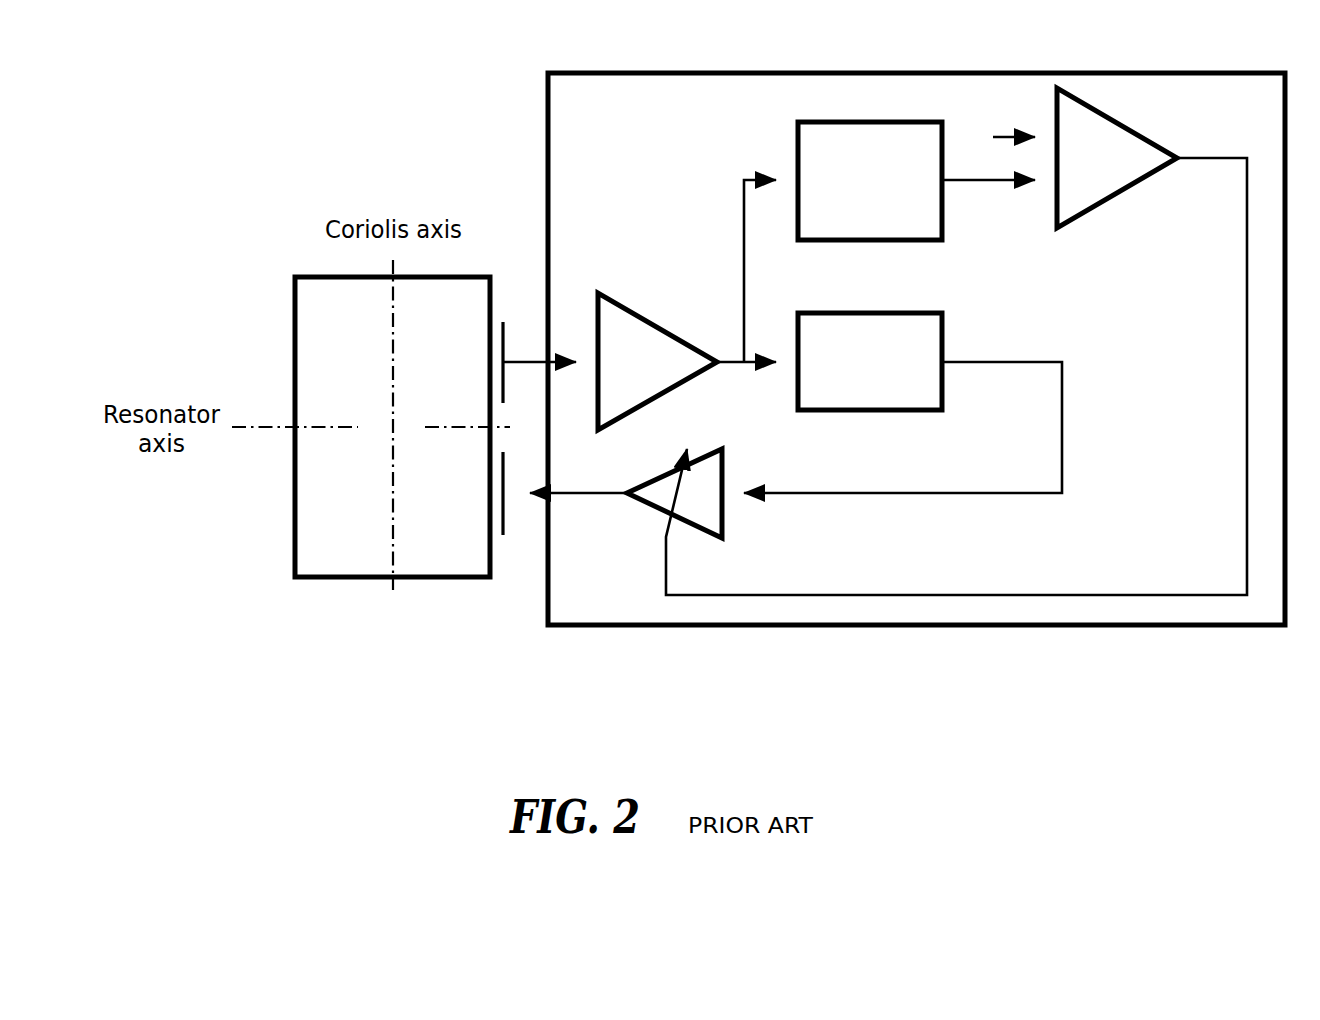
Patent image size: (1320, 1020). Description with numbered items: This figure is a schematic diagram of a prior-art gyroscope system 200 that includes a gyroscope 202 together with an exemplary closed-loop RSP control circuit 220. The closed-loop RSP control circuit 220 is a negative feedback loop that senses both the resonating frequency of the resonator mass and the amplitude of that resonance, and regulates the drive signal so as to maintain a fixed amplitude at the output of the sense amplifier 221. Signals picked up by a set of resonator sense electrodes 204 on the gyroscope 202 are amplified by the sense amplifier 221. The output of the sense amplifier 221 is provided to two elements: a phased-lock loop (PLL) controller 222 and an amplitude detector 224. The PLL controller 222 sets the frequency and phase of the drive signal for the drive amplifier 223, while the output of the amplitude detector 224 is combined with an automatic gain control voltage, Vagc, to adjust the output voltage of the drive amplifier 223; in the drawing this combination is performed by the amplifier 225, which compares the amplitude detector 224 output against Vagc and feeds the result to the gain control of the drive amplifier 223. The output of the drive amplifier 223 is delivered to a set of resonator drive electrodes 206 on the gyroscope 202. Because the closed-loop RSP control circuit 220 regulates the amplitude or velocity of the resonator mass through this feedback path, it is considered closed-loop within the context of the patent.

The gyroscope system 200 is at (728, 707).
The gyroscope 202 is at (470, 562).
The resonator sense electrodes 204 is at (505, 337).
The resonator drive electrodes 206 is at (505, 515).
The closed-loop RSP control circuit 220 is at (632, 120).
The sense amplifier 221 is at (662, 388).
The phased-lock loop (PLL) controller 222 is at (892, 402).
The drive amplifier 223 is at (723, 470).
The amplitude detector 224 is at (892, 233).
The AGC error amplifier 225 is at (1137, 171).